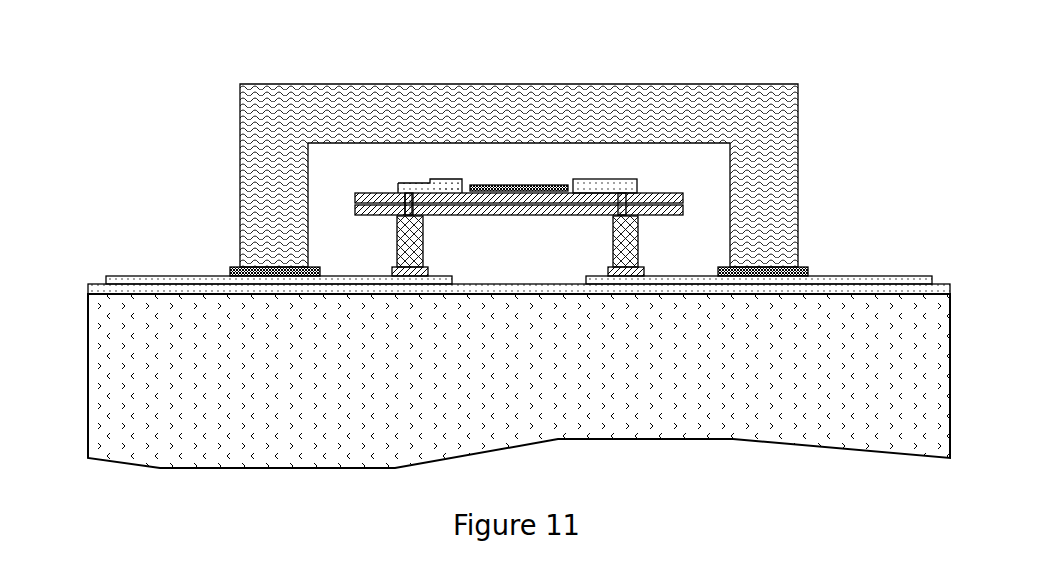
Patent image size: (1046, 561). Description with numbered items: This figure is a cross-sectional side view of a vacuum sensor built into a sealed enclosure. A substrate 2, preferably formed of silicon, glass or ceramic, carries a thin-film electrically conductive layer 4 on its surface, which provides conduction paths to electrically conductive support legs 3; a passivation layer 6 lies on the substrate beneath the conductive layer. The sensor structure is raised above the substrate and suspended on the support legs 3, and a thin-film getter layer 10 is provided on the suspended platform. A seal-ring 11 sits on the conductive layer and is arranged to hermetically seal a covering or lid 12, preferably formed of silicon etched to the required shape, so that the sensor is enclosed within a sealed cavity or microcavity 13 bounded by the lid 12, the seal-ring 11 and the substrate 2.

The silicon substrate 2 is at (142, 433).
The electrically conductive support legs 3 is at (627, 247).
The thin-film electrically conductive layer 4 is at (150, 280).
The passivation layer 6 is at (112, 290).
The thin-film getter layer 10 is at (518, 187).
The seal-ring 11 is at (233, 270).
The lid 12 is at (260, 133).
The microcavity 13 is at (673, 172).